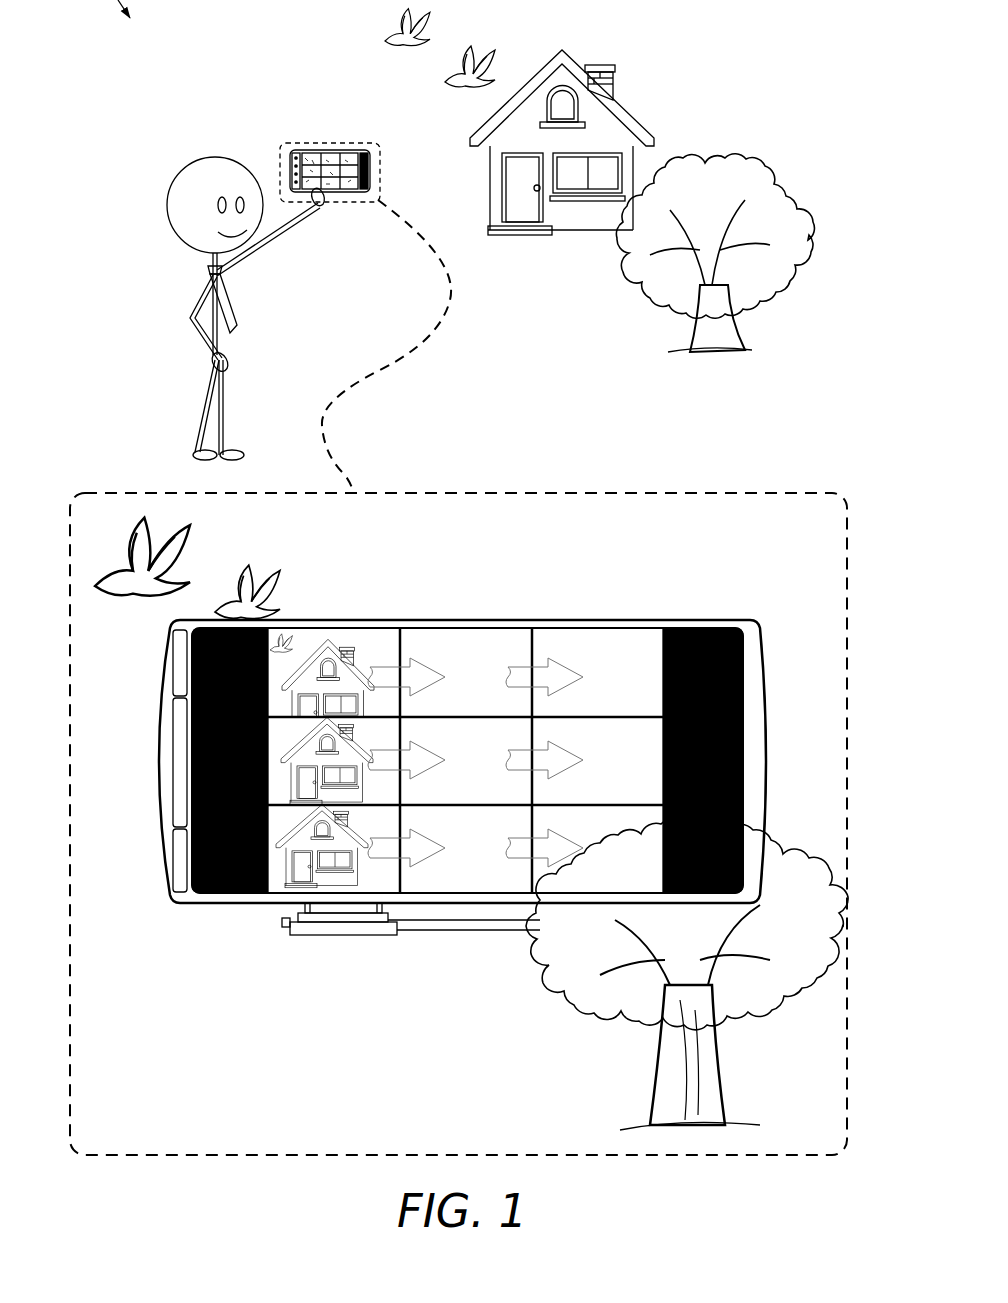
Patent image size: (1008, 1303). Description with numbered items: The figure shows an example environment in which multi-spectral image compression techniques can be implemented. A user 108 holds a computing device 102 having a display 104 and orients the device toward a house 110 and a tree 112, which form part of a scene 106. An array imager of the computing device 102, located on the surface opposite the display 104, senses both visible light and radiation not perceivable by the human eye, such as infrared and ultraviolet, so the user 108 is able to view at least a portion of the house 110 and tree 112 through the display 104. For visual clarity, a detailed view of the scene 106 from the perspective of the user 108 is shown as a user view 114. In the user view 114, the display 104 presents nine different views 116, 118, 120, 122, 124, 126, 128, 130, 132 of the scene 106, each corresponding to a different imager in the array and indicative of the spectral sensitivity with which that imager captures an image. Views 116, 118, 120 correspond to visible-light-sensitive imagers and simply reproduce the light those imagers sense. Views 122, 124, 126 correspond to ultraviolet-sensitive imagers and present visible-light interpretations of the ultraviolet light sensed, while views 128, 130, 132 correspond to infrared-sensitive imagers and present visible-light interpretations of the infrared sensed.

The computing device 102 is at (353, 147).
The display 104 is at (670, 624).
The scene 106 is at (673, 86).
The user 108 is at (190, 320).
The house 110 is at (597, 65).
The tree 112 is at (724, 147).
The user view 114 is at (385, 170).
The view 116 is at (391, 656).
The view 118 is at (391, 744).
The view 120 is at (391, 832).
The view 122 is at (523, 656).
The view 124 is at (523, 744).
The view 126 is at (523, 832).
The view 128 is at (655, 656).
The view 130 is at (655, 744).
The view 132 is at (655, 832).